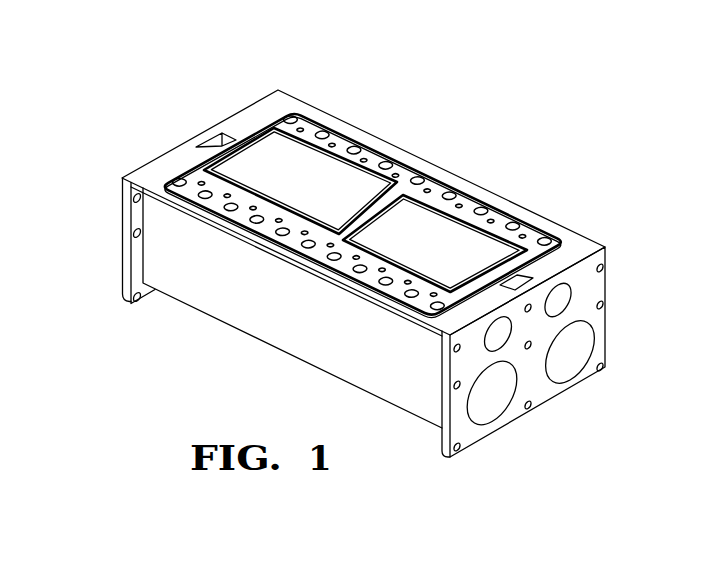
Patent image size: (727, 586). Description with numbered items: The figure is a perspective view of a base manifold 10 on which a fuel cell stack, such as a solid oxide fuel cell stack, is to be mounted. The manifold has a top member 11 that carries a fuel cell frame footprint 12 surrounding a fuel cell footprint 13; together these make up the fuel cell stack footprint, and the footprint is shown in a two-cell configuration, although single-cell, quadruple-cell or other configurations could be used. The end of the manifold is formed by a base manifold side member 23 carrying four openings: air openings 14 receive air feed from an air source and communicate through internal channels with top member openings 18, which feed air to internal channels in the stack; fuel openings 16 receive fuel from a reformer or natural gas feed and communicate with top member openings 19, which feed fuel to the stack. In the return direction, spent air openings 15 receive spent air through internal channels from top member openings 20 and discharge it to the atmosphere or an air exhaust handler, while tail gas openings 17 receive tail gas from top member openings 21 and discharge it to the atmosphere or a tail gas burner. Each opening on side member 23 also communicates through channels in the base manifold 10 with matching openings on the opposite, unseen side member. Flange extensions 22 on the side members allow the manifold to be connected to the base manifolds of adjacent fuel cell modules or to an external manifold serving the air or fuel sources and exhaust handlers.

The base manifold 10 is at (112, 152).
The top member 11 is at (265, 107).
The fuel cell frame footprint 12 is at (247, 138).
The fuel cell footprint 13 is at (227, 172).
The air opening 14 is at (568, 362).
The spent air opening 15 is at (481, 411).
The fuel opening 16 is at (562, 304).
The tail gas opening 17 is at (492, 336).
The top member opening 18 is at (415, 185).
The top member opening 19 is at (460, 208).
The top member opening 20 is at (335, 255).
The top member opening 21 is at (304, 231).
The flange extension 22 is at (128, 265).
The base manifold side member 23 is at (578, 283).